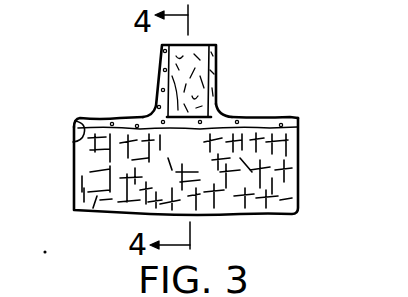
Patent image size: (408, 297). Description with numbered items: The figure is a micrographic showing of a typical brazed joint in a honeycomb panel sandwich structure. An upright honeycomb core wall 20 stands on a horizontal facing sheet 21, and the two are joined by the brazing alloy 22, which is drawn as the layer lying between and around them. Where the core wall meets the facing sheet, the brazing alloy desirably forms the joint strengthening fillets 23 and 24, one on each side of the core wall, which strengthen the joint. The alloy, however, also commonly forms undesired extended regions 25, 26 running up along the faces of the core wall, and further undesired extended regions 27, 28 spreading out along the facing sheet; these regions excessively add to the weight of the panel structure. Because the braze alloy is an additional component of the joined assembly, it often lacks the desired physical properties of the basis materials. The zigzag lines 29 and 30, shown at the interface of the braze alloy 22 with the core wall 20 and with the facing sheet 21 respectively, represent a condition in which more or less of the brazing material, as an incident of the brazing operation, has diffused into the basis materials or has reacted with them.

The honeycomb core wall 20 is at (218, 62).
The facing sheet 21 is at (298, 216).
The brazing alloy 22 is at (187, 165).
The joint strengthening fillet 23 is at (224, 113).
The joint strengthening fillet 24 is at (147, 116).
The extended region 25 is at (160, 60).
The extended region 26 is at (218, 44).
The extended region 27 is at (82, 117).
The extended region 28 is at (287, 116).
The zigzag line 29 is at (168, 73).
The zigzag line 30 is at (72, 152).